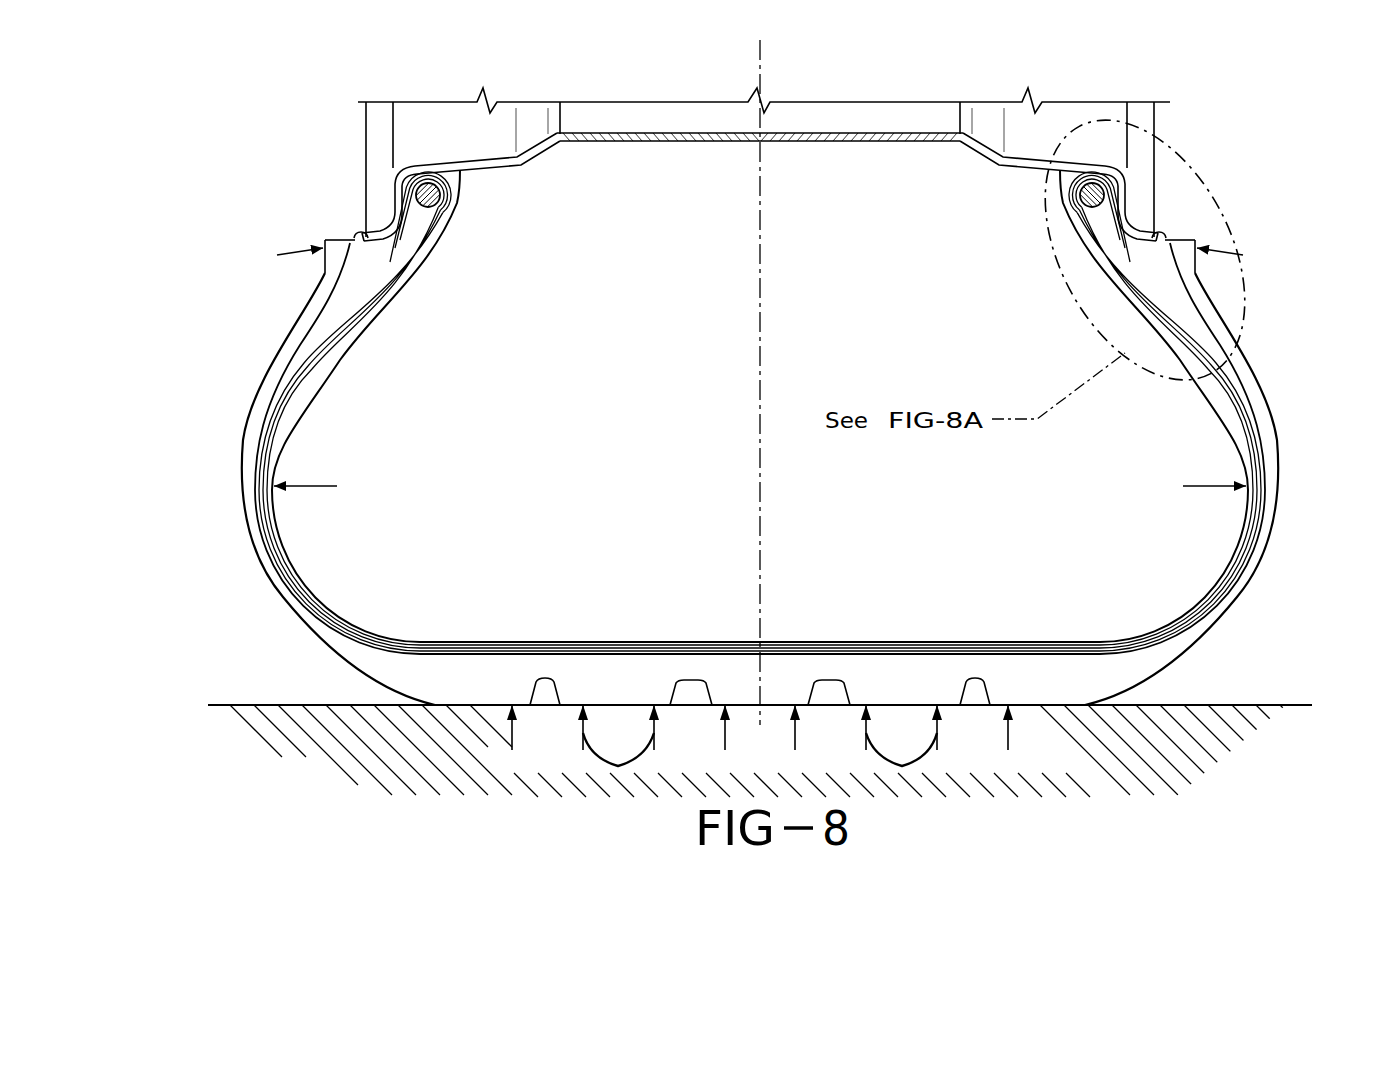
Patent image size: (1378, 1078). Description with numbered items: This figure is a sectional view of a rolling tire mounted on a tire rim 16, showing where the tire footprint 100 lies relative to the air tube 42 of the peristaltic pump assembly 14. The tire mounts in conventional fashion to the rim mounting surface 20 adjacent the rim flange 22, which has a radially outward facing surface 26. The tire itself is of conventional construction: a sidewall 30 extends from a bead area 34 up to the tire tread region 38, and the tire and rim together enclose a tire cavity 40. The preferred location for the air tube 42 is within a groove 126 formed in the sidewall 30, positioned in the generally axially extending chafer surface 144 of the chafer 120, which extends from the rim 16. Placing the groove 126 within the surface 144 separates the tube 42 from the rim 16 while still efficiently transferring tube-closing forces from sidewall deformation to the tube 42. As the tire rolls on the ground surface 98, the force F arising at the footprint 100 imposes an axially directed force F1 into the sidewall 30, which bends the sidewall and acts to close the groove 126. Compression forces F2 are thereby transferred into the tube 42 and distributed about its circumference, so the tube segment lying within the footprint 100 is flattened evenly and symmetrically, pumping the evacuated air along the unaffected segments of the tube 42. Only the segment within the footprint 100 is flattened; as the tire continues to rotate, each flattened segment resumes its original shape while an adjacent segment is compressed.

The peristaltic pump assembly 14 is at (346, 235).
The tire rim 16 is at (849, 136).
The rim mounting surface 20 is at (1022, 169).
The rim flange 22 is at (1126, 199).
The radially outward facing surface 26 is at (1102, 214).
The sidewall 30 is at (1242, 406).
The bead area 34 is at (1100, 188).
The tire tread region 38 is at (893, 680).
The tire cavity 40 is at (343, 582).
The air tube 42 is at (341, 243).
The ground surface 98 is at (1244, 705).
The tire footprint 100 is at (1050, 709).
The chafer 120 is at (330, 295).
The groove 126 is at (1165, 241).
The chafer surface 144 is at (353, 240).
The force F is at (760, 753).
The axial directed force F1 is at (760, 486).
The compression forces F2 is at (760, 257).